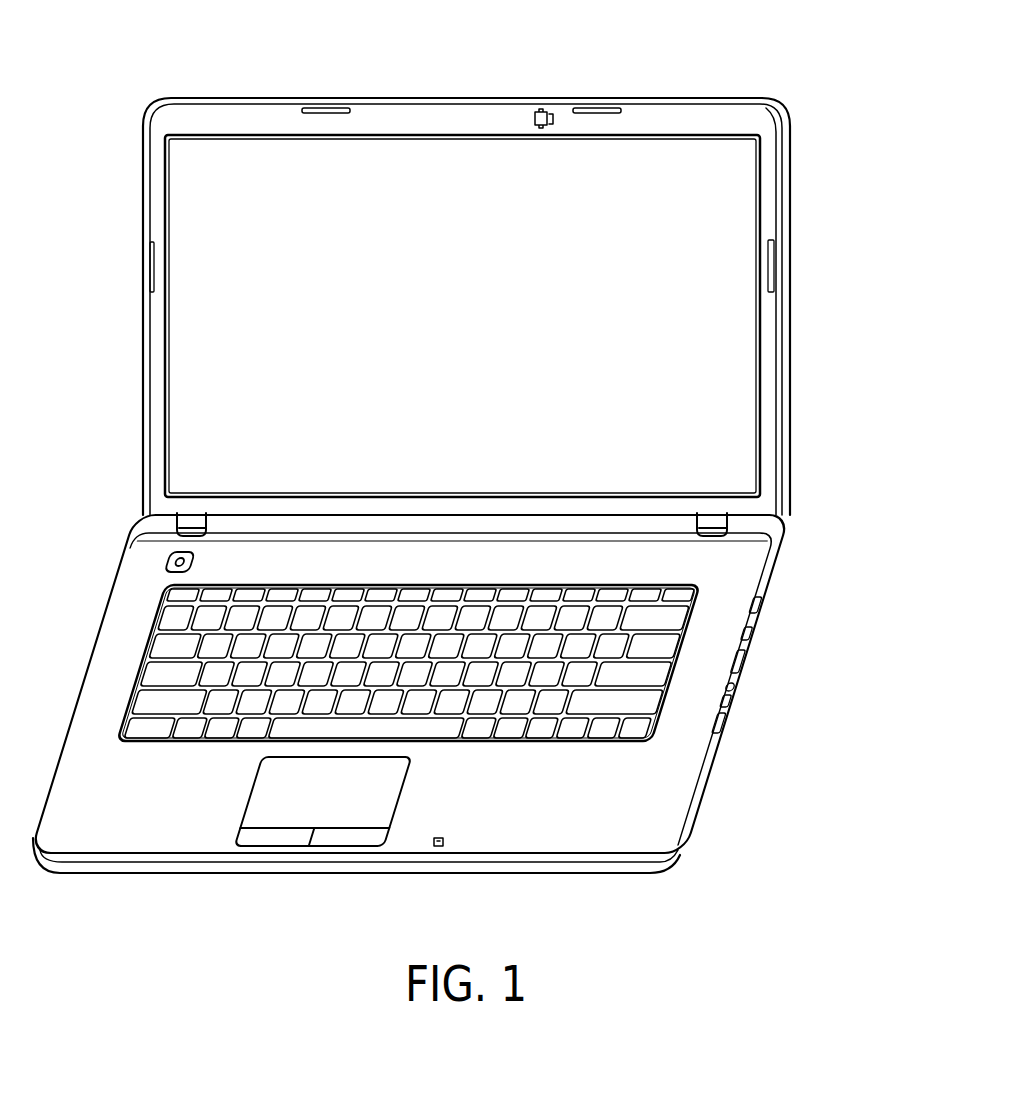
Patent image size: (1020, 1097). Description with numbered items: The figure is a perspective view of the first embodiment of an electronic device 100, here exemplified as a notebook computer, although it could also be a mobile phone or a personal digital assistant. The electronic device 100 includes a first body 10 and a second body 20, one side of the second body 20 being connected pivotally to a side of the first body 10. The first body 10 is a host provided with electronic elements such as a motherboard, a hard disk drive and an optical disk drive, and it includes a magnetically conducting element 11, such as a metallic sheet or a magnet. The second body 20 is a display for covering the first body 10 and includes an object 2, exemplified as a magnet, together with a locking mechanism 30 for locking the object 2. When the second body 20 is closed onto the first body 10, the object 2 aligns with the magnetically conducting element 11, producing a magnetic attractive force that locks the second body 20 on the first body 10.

The electronic device 100 is at (806, 90).
The second body 20 is at (798, 297).
The first body 10 is at (740, 700).
The object 2 is at (541, 102).
The locking mechanism 30 is at (562, 123).
The magnetically conducting element 11 is at (443, 835).